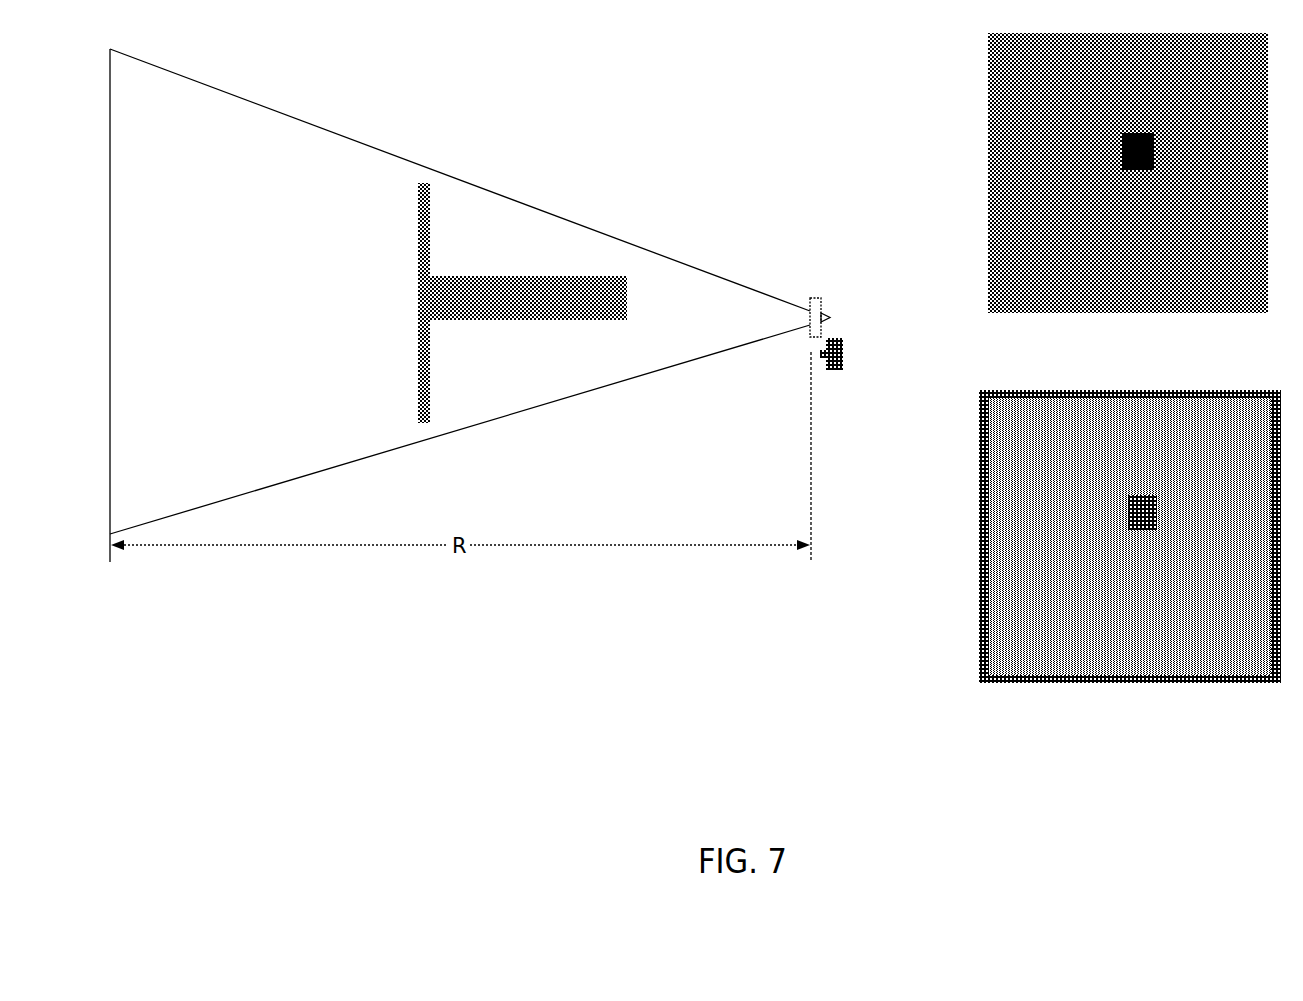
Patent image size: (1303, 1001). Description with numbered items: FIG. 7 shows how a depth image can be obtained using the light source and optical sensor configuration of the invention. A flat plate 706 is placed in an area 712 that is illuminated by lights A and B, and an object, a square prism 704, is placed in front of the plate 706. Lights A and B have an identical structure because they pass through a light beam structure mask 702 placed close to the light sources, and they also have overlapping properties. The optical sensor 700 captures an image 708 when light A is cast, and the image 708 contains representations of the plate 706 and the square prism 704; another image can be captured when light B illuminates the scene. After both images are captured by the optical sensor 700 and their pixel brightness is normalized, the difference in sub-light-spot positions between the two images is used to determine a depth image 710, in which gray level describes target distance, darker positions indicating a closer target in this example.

The optical sensor 700 is at (835, 370).
The light beam structure mask 702 is at (810, 297).
The square prism 704 is at (627, 318).
The flat plate 706 is at (430, 410).
The image 708 is at (1092, 313).
The depth image 710 is at (1102, 683).
The area illuminated by lights A and B 712 is at (326, 402).